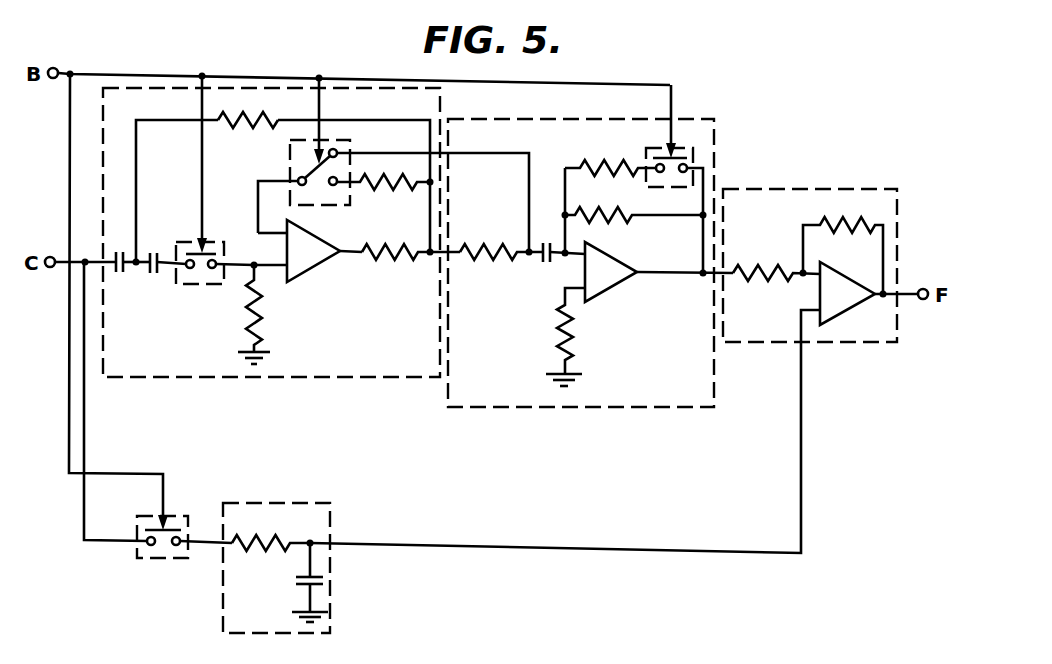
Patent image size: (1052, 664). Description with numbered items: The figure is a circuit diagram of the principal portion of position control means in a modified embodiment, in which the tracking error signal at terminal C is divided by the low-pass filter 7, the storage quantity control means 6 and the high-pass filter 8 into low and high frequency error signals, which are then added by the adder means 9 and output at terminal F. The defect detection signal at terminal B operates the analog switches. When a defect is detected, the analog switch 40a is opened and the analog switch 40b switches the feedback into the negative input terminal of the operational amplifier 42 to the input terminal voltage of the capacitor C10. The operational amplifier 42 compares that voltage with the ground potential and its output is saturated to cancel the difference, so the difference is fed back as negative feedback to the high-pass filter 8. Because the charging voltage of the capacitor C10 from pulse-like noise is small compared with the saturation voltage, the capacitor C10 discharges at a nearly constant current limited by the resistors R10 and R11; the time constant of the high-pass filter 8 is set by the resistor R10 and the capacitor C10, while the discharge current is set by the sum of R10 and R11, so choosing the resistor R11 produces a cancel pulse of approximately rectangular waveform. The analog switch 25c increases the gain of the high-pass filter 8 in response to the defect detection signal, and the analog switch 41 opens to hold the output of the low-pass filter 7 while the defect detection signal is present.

The storage quantity control means 6 is at (357, 378).
The low-pass filter 7 is at (331, 634).
The high-pass filter 8 is at (716, 121).
The adder means 9 is at (897, 190).
The analog switch 25c is at (650, 153).
The analog switch 40a is at (178, 285).
The analog switch 40b is at (345, 205).
The analog switch 41 is at (158, 560).
The operational amplifier 42 is at (312, 262).
The resistor R10 is at (500, 262).
The resistor R11 is at (383, 262).
The capacitor C10 is at (546, 265).